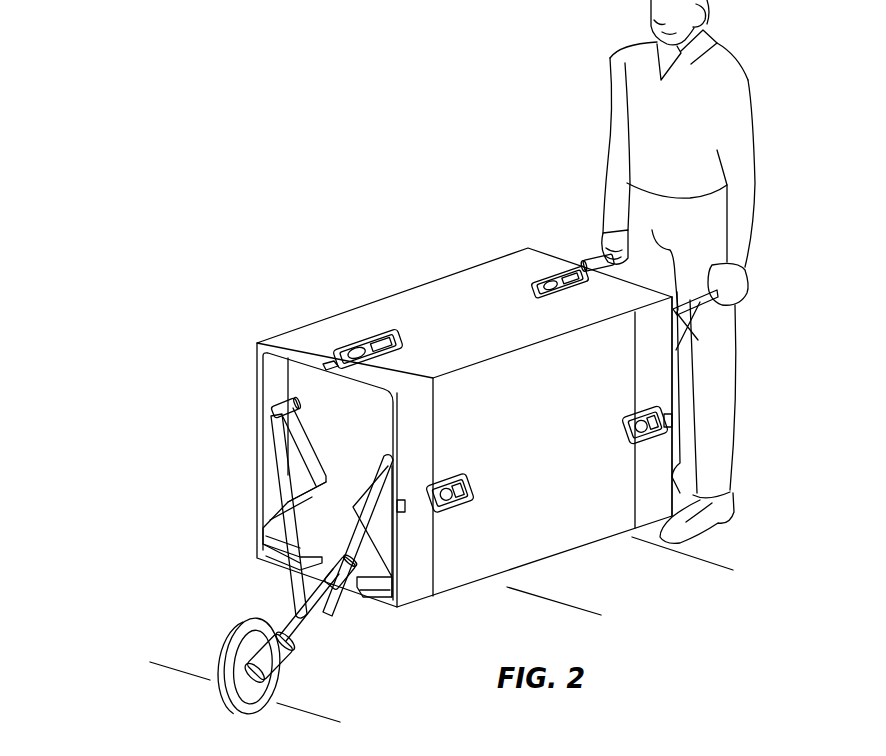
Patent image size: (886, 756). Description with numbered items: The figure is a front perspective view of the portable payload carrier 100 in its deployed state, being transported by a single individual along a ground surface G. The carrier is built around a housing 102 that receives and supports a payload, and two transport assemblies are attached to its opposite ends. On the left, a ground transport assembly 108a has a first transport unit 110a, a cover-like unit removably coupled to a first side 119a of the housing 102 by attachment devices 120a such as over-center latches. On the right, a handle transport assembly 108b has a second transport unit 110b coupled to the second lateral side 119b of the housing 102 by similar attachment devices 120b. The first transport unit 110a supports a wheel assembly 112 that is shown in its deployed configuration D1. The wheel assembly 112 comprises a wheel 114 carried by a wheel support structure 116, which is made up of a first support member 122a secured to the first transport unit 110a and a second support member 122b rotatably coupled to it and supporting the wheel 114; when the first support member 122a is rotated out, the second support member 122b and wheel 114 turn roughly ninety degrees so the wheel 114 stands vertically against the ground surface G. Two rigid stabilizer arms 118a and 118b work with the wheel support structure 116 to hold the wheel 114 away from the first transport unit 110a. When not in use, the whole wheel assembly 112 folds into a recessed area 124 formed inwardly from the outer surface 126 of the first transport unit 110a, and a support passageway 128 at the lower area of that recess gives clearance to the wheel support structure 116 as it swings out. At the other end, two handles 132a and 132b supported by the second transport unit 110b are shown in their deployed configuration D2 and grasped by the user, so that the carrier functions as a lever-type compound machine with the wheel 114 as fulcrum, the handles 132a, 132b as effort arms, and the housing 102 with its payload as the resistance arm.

The portable payload carrier 100 is at (286, 208).
The housing 102 is at (393, 305).
The ground transport assembly 108a is at (278, 322).
The handle transport assembly 108b is at (550, 242).
The first transport unit 110a is at (418, 590).
The second transport unit 110b is at (519, 262).
The wheel assembly 112 is at (206, 560).
The wheel 114 is at (225, 647).
The wheel support structure 116 is at (302, 633).
The first stabilizer arm 118a is at (262, 486).
The second stabilizer arm 118b is at (328, 600).
The first side of the housing 119a is at (157, 452).
The second lateral side of the housing 119b is at (762, 302).
The attachment devices 120a is at (400, 347).
The attachment devices 120b is at (536, 293).
The first support member 122a is at (333, 592).
The second support member 122b is at (290, 647).
The recessed area 124 is at (310, 397).
The outer surface 126 is at (388, 542).
The support passageway 128 is at (304, 578).
The first handle 132a is at (703, 337).
The second handle 132b is at (587, 250).
The deployed configuration D1 is at (212, 335).
The deployed configuration D2 is at (558, 172).
The ground surface G is at (566, 601).